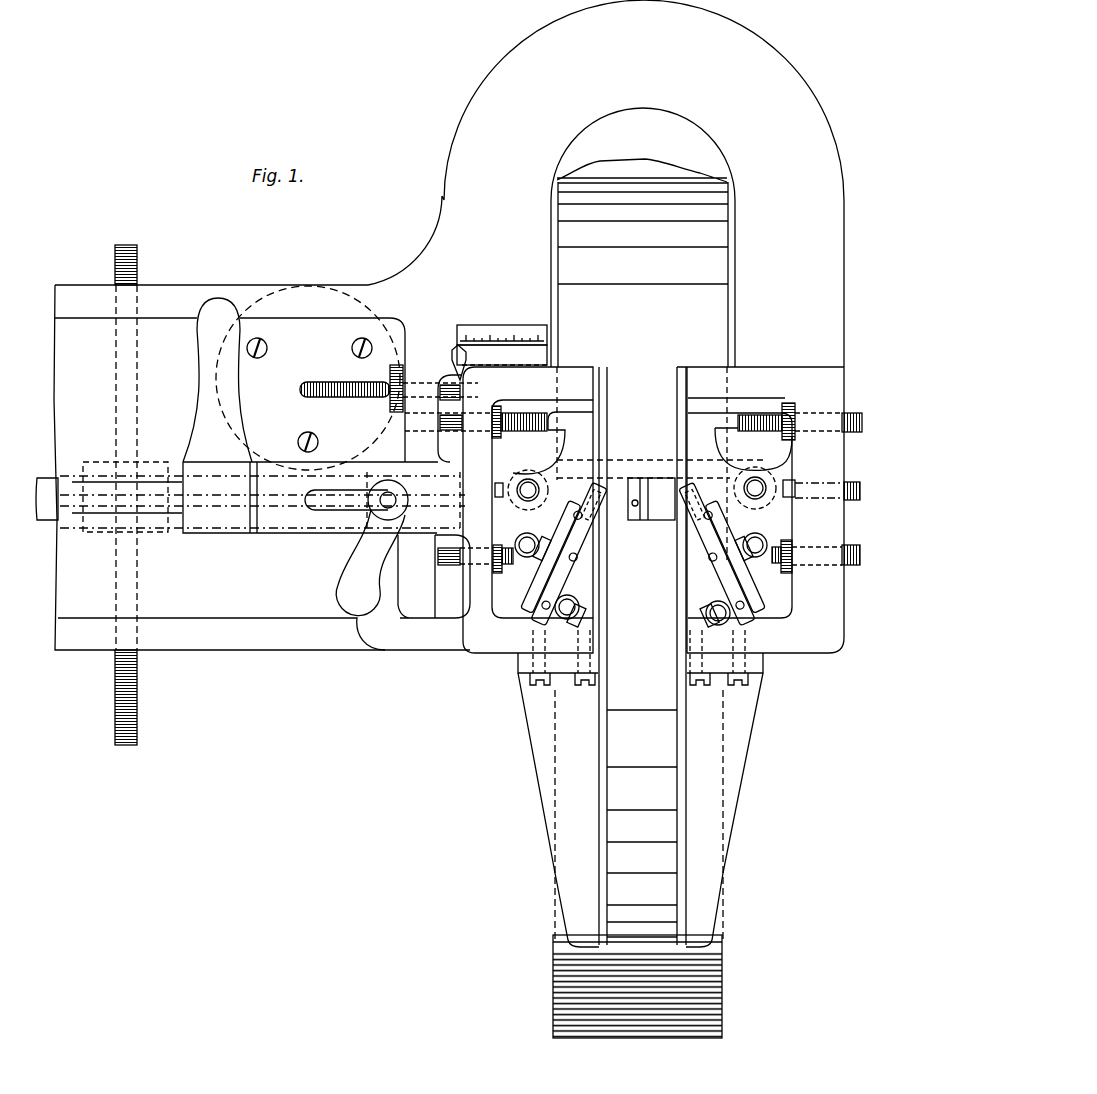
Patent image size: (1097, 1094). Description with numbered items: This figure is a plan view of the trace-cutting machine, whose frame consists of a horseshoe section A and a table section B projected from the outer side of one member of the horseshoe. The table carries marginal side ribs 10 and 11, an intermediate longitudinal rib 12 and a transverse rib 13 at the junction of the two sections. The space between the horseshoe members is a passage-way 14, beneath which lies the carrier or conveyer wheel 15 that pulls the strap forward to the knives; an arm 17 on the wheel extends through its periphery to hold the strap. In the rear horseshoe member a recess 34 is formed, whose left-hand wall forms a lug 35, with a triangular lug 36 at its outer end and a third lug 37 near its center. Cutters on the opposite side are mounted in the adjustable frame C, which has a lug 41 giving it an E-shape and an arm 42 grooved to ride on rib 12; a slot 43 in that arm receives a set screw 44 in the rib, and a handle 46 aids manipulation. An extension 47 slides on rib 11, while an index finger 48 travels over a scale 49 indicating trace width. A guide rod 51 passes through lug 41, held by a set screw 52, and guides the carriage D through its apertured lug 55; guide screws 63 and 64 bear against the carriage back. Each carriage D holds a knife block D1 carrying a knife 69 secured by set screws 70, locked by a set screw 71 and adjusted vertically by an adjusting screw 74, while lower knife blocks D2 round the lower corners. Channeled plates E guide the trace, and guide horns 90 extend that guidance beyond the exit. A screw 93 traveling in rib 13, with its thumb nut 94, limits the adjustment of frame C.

The marginal side rib 10 is at (152, 447).
The marginal side rib 11 is at (221, 681).
The intermediate longitudinal rib 12 is at (250, 497).
The transverse rib 13 is at (435, 418).
The passage-way 14 is at (642, 153).
The carrier or conveyer wheel 15 is at (643, 563).
The arm 17 is at (640, 488).
The recess 34 is at (753, 449).
The lug 35 is at (760, 510).
The triangular lug 36 is at (595, 612).
The lug 37 is at (790, 484).
The lug 41 is at (503, 483).
The arm 42 is at (400, 508).
The slot 43 is at (312, 505).
The set screw 44 is at (397, 502).
The handle 46 is at (310, 415).
The extension 47 is at (434, 591).
The index finger 48 is at (455, 350).
The scale 49 is at (514, 325).
The guide rod 51 is at (530, 483).
The set screw 52 is at (850, 500).
The top horizontal lug 55 is at (800, 492).
The guide screw 63 is at (526, 413).
The guide screw 64 is at (462, 570).
The knife 69 is at (590, 535).
The set screw 70 is at (700, 560).
The set screw 71 is at (613, 573).
The adjusting screw 74 is at (520, 545).
The guide horn 90 is at (640, 834).
The screw 93 is at (308, 378).
The thumb nut 94 is at (434, 385).
The horse-shoe section A is at (606, 326).
The table section B is at (262, 467).
The shifting or adjustable frame C is at (528, 510).
The carriage D is at (642, 455).
The knife block D1 is at (508, 582).
The knife block D2 is at (639, 594).
The channeled plate E is at (610, 430).